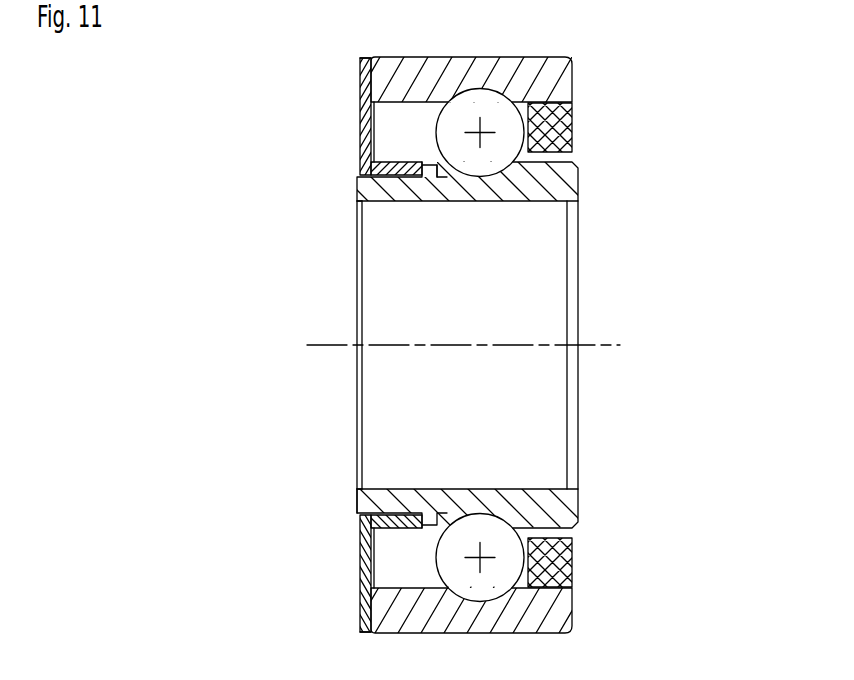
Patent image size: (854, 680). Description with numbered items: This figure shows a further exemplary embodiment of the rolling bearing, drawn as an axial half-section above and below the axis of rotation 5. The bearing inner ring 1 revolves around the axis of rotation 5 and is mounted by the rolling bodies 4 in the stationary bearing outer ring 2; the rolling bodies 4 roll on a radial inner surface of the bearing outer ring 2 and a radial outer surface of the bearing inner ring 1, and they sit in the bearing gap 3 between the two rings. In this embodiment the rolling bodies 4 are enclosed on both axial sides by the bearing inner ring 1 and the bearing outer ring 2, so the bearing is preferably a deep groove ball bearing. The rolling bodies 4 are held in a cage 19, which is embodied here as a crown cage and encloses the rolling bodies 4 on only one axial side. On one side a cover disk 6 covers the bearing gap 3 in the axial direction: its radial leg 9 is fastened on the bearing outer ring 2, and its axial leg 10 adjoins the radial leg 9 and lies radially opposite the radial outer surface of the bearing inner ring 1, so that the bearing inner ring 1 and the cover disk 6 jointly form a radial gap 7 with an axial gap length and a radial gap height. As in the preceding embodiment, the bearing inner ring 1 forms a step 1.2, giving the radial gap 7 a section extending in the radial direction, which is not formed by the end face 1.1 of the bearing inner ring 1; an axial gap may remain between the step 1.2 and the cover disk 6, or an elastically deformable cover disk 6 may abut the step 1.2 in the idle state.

The bearing inner ring 1 is at (553, 186).
The end face 1.1 is at (357, 495).
The step 1.2 is at (447, 178).
The bearing outer ring 2 is at (556, 95).
The bearing gap 3 is at (403, 130).
The rolling bodies 4 is at (483, 162).
The axis of rotation 5 is at (608, 345).
The cover disk 6 is at (360, 123).
The radial gap 7 is at (360, 177).
The radial leg 9 is at (360, 92).
The axial leg 10 is at (375, 183).
The cage 19 is at (540, 557).